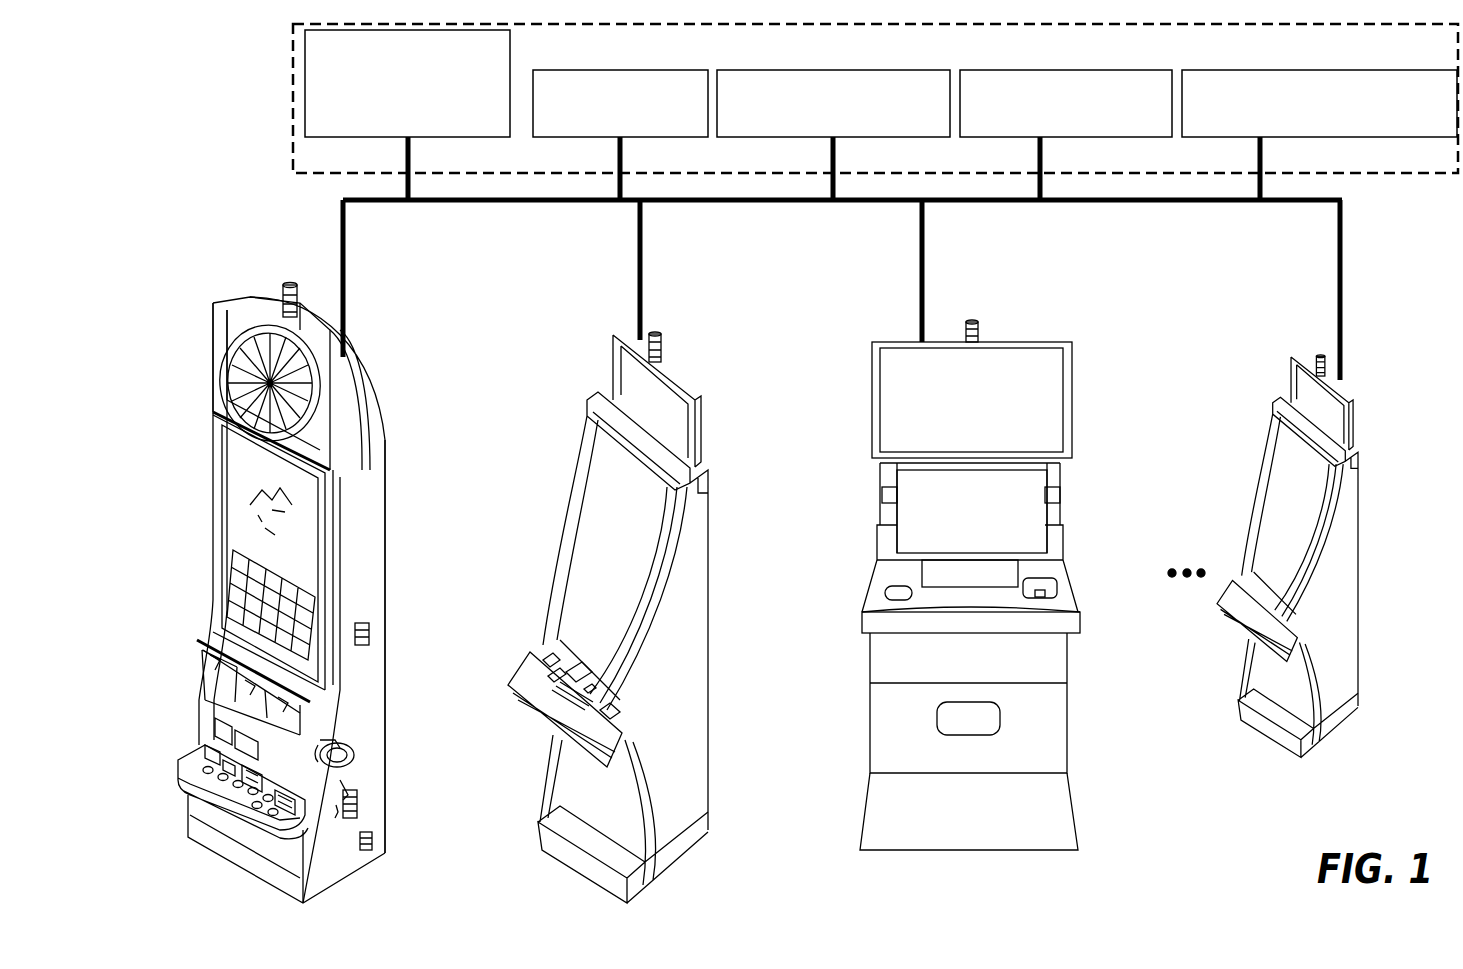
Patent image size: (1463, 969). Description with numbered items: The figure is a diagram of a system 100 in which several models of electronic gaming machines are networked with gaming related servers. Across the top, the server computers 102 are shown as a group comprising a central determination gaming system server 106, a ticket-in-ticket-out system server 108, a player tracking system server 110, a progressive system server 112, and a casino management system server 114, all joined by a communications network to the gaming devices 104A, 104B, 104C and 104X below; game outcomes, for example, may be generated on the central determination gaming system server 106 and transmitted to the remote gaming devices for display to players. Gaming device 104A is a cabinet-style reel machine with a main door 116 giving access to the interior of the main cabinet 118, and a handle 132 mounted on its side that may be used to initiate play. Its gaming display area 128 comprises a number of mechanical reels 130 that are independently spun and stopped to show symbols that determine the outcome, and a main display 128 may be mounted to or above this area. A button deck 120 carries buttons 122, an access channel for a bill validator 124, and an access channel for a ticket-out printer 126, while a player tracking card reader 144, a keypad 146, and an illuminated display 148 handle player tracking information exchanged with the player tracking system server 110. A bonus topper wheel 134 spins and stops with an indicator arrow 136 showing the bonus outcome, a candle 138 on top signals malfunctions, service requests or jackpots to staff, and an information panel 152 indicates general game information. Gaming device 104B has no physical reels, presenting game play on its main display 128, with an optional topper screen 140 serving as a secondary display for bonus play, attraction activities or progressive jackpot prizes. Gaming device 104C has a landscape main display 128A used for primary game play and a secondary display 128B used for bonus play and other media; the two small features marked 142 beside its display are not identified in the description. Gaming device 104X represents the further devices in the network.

The system 100 is at (203, 102).
The server computers 102 is at (1340, 173).
The gaming device 104A is at (168, 340).
The gaming device 104B is at (560, 395).
The gaming device 104C is at (862, 308).
The gaming device 104X is at (1273, 358).
The central determination gaming system server 106 is at (467, 137).
The ticket-in-ticket-out system server 108 is at (662, 137).
The player tracking system server 110 is at (873, 137).
The progressive system server 112 is at (1125, 137).
The casino management system server 114 is at (1362, 137).
The main door 116 is at (197, 800).
The main cabinet 118 is at (197, 670).
The button deck 120 is at (200, 777).
The buttons 122 is at (207, 762).
The bill validator 124 is at (290, 795).
The ticket-out printer 126 is at (203, 732).
The gaming display area 128 is at (305, 517).
The main display 128A is at (1047, 515).
The secondary display 128B is at (1072, 420).
The mechanical reels 130 is at (195, 647).
The handle 132 is at (340, 745).
The bonus topper wheel 134 is at (323, 407).
The indicator arrow 136 is at (262, 303).
The candle 138 is at (305, 300).
The topper screen 140 is at (705, 415).
The speakers 142 is at (882, 490).
The player tracking card reader 144 is at (325, 760).
The keypad 146 is at (270, 752).
The illuminated display 148 is at (200, 720).
The information panels 152 is at (210, 700).